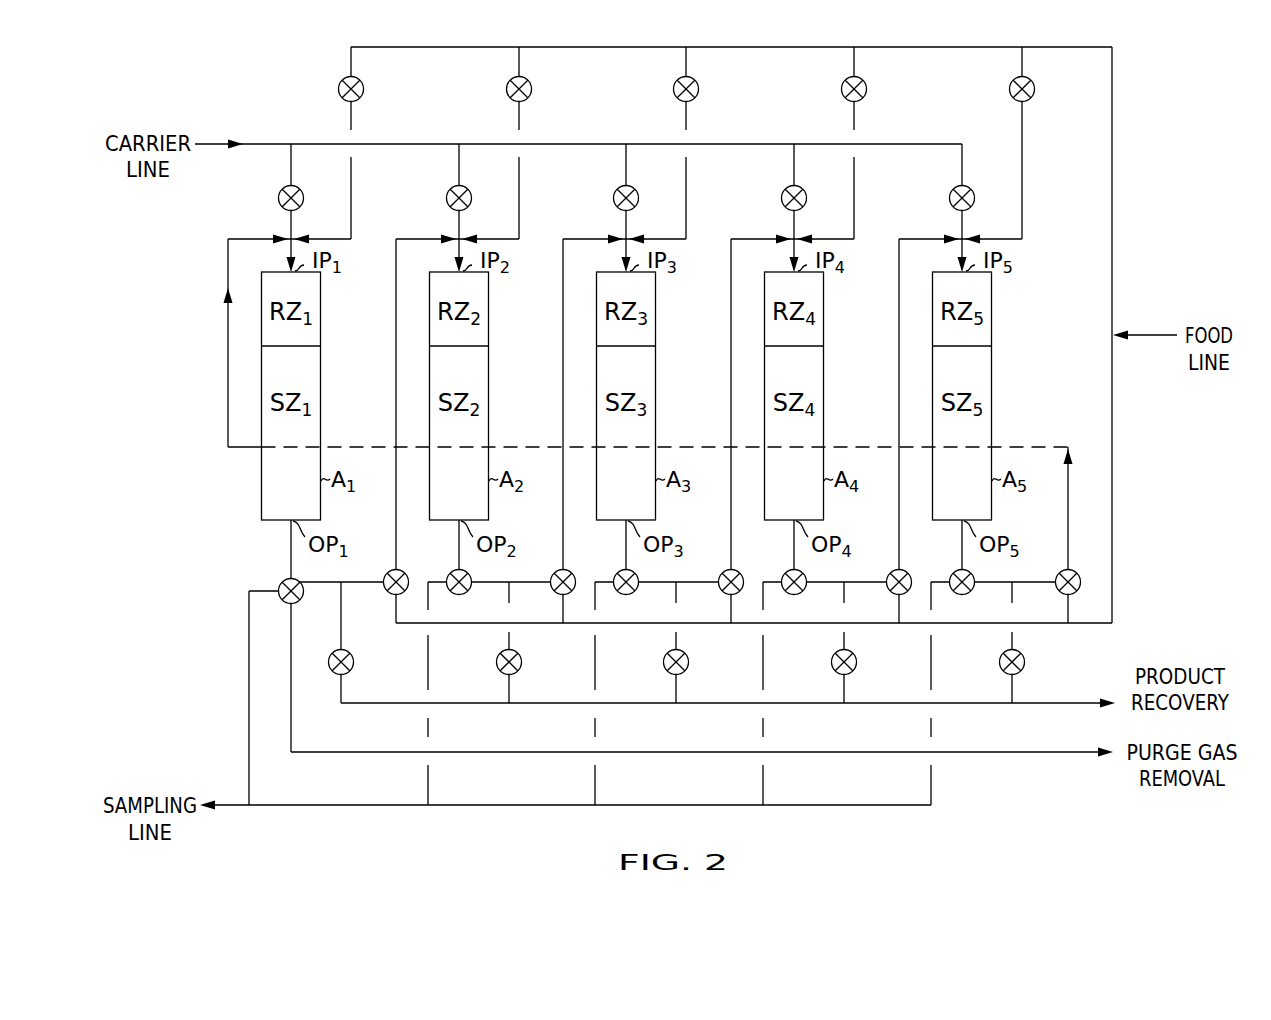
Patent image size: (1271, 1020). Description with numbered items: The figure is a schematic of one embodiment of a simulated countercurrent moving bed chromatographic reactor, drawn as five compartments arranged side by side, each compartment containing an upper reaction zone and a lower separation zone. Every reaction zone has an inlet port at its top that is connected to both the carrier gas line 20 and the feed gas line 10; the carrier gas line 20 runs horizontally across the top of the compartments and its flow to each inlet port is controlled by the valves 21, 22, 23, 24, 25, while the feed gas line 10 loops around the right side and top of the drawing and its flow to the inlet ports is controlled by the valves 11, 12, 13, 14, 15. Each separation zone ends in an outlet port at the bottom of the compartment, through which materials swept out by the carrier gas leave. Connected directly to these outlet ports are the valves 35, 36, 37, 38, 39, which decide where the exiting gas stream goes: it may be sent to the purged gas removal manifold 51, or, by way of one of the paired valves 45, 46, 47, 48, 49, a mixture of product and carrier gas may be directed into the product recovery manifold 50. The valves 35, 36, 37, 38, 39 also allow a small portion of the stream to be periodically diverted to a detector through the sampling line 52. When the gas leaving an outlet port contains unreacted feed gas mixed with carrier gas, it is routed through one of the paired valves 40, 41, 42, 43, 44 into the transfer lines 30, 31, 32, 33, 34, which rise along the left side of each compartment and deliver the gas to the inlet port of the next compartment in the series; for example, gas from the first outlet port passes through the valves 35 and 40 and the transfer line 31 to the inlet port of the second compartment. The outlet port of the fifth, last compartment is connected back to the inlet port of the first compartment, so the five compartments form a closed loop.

The feed gas line 10 is at (1147, 330).
The feed gas valve 11 is at (1035, 91).
The feed gas valve 12 is at (867, 91).
The feed gas valve 13 is at (699, 91).
The feed gas valve 14 is at (532, 91).
The feed gas valve 15 is at (364, 91).
The carrier gas line 20 is at (211, 141).
The carrier gas valve 21 is at (300, 189).
The carrier gas valve 22 is at (468, 189).
The carrier gas valve 23 is at (635, 189).
The carrier gas valve 24 is at (803, 189).
The carrier gas valve 25 is at (971, 189).
The transfer line 30 is at (224, 342).
The transfer line 31 is at (392, 342).
The transfer line 32 is at (559, 342).
The transfer line 33 is at (727, 342).
The transfer line 34 is at (895, 342).
The outlet port valve 35 is at (280, 582).
The outlet port valve 36 is at (469, 592).
The outlet port valve 37 is at (636, 592).
The outlet port valve 38 is at (804, 592).
The outlet port valve 39 is at (972, 592).
The transfer valve 40 is at (386, 593).
The transfer valve 41 is at (553, 593).
The transfer valve 42 is at (721, 593).
The transfer valve 43 is at (889, 593).
The transfer valve 44 is at (1058, 593).
The product recovery valve 45 is at (354, 664).
The product recovery valve 46 is at (522, 664).
The product recovery valve 47 is at (689, 664).
The product recovery valve 48 is at (857, 664).
The product recovery valve 49 is at (1025, 664).
The product recovery manifold 50 is at (962, 705).
The purged gas removal manifold 51 is at (842, 754).
The sampling line 52 is at (312, 807).